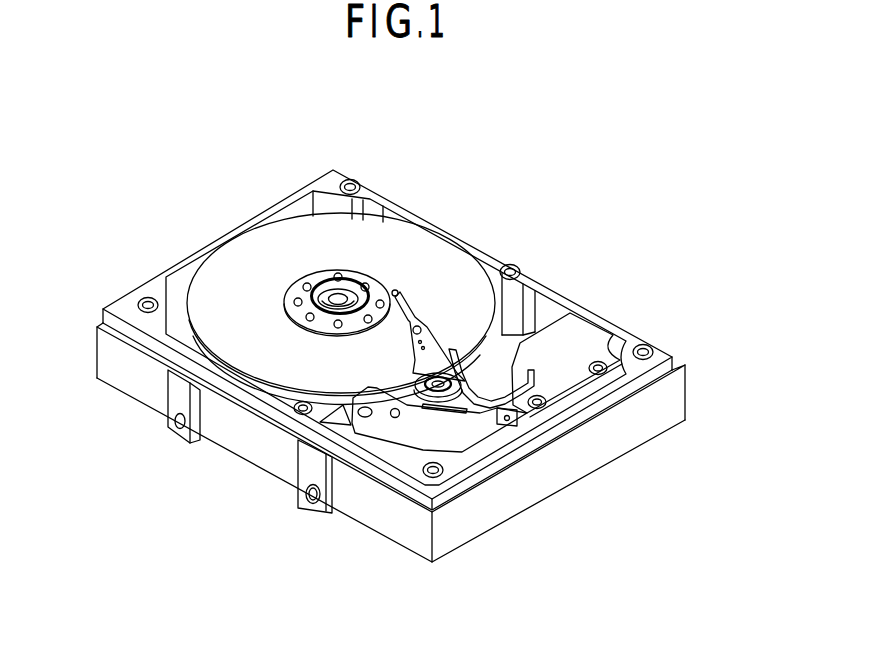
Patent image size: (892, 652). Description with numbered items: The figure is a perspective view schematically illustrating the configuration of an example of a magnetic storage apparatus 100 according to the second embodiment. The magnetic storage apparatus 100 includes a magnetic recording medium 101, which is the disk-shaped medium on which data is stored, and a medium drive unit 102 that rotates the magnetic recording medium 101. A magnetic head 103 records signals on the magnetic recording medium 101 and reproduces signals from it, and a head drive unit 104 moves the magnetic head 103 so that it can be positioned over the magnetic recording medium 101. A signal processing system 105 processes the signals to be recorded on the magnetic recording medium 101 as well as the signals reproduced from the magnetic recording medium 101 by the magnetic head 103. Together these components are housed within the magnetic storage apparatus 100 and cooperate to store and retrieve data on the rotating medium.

The magnetic storage apparatus 100 is at (103, 132).
The magnetic recording medium 101 is at (387, 257).
The medium drive unit 102 is at (293, 287).
The magnetic head 103 is at (396, 291).
The head drive unit 104 is at (462, 420).
The signal processing system 105 is at (582, 347).